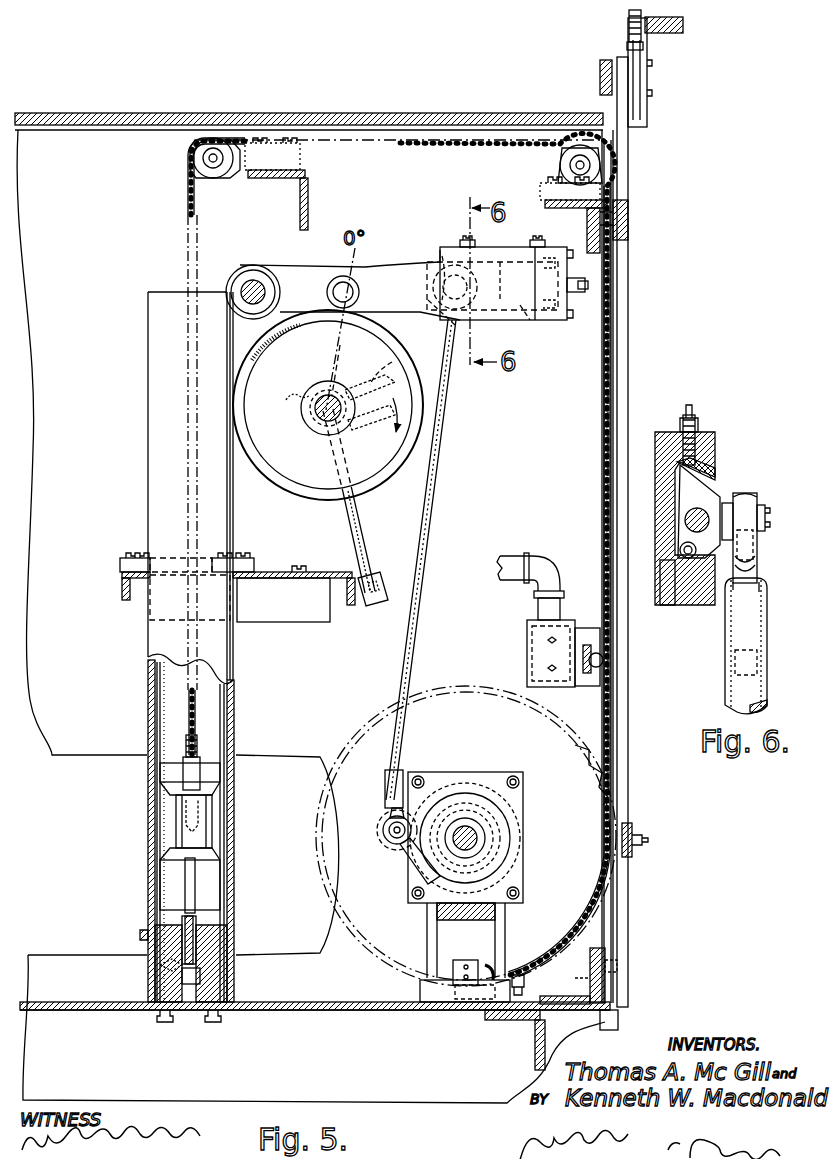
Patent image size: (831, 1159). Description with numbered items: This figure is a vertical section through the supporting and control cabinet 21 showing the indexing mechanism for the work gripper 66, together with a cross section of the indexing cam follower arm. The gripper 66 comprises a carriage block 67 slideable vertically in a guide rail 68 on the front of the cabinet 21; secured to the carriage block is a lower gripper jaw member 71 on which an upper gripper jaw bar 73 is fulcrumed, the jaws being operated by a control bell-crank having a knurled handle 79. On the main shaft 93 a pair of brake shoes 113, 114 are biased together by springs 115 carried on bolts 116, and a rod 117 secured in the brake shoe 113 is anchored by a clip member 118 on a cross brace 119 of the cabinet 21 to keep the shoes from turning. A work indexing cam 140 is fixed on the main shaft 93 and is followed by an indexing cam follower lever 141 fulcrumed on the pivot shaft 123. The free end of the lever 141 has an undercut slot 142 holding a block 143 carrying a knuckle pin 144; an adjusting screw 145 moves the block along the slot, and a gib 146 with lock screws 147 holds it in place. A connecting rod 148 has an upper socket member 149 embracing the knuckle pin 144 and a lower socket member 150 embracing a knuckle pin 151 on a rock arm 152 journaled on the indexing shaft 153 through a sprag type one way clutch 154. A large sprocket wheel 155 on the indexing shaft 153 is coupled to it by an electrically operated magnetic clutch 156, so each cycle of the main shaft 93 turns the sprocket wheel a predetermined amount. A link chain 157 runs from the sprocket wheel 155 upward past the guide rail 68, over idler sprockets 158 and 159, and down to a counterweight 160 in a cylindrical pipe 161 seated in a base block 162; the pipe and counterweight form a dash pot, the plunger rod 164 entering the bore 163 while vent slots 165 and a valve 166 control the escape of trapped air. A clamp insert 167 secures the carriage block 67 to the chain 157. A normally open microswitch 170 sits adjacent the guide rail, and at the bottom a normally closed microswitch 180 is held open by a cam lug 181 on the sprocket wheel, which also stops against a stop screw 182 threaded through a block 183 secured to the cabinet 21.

In FIG. 5, the cabinet 21 is at (349, 111).
In FIG. 5, the work gripper 66 is at (660, 72).
In FIG. 5, the carriage block 67 is at (630, 157).
In FIG. 5, the guide rail 68 is at (622, 345).
In FIG. 5, the lower gripper jaw member 71 is at (627, 46).
In FIG. 5, the upper gripper jaw bar 73 is at (628, 24).
In FIG. 5, the knurled handle 79 is at (683, 25).
In FIG. 5, the main shaft 93 is at (316, 404).
In FIG. 5, the brake shoe 113 is at (286, 404).
In FIG. 5, the brake shoe 114 is at (343, 367).
In FIG. 5, the spring 115 is at (373, 418).
In FIG. 5, the bolt 116 is at (392, 360).
In FIG. 5, the rod 117 is at (349, 513).
In FIG. 5, the clip member 118 is at (372, 576).
In FIG. 5, the cross brace 119 is at (339, 571).
In FIG. 5, the pivot shaft 123 is at (251, 286).
In FIG. 5, the work indexing cam 140 is at (294, 478).
In FIG. 5, the indexing cam follower lever 141 is at (386, 280).
In FIG. 6, the indexing cam follower lever 141 is at (668, 432).
In FIG. 5, the undercut slot 142 is at (524, 322).
In FIG. 6, the undercut slot 142 is at (684, 565).
In FIG. 5, the block 143 is at (432, 263).
In FIG. 6, the block 143 is at (706, 506).
In FIG. 5, the knuckle pin 144 is at (480, 316).
In FIG. 6, the knuckle pin 144 is at (753, 494).
In FIG. 5, the adjusting screw 145 is at (500, 262).
In FIG. 6, the adjusting screw 145 is at (685, 526).
In FIG. 6, the gib 146 is at (702, 474).
In FIG. 5, the lock screw 147 is at (463, 240).
In FIG. 6, the lock screw 147 is at (692, 408).
In FIG. 5, the connecting rod 148 is at (433, 477).
In FIG. 6, the connecting rod 148 is at (732, 684).
In FIG. 5, the socket member 149 is at (442, 256).
In FIG. 6, the socket member 149 is at (752, 556).
In FIG. 5, the socket member 150 is at (384, 824).
In FIG. 5, the knuckle pin 151 is at (380, 836).
In FIG. 5, the rock arm 152 is at (405, 850).
In FIG. 5, the indexing shaft 153 is at (480, 843).
In FIG. 5, the sprag type one way clutch 154 is at (473, 795).
In FIG. 5, the sprocket wheel 155 is at (566, 742).
In FIG. 5, the magnetic clutch 156 is at (437, 792).
In FIG. 5, the link chain 157 is at (187, 192).
In FIG. 5, the idler sprocket 158 is at (570, 168).
In FIG. 5, the idler sprocket 159 is at (228, 183).
In FIG. 5, the counterweight 160 is at (198, 848).
In FIG. 5, the cylindrical pipe 161 is at (236, 790).
In FIG. 5, the base block 162 is at (216, 948).
In FIG. 5, the bore 163 is at (200, 980).
In FIG. 5, the plunger rod 164 is at (200, 931).
In FIG. 5, the vent slot 165 is at (185, 762).
In FIG. 5, the valve 166 is at (160, 966).
In FIG. 5, the clamp insert 167 is at (630, 210).
In FIG. 5, the microswitch 170 is at (543, 609).
In FIG. 5, the microswitch 180 is at (462, 1012).
In FIG. 5, the cam lug 181 is at (460, 960).
In FIG. 5, the stop screw 182 is at (524, 988).
In FIG. 5, the block 183 is at (425, 990).